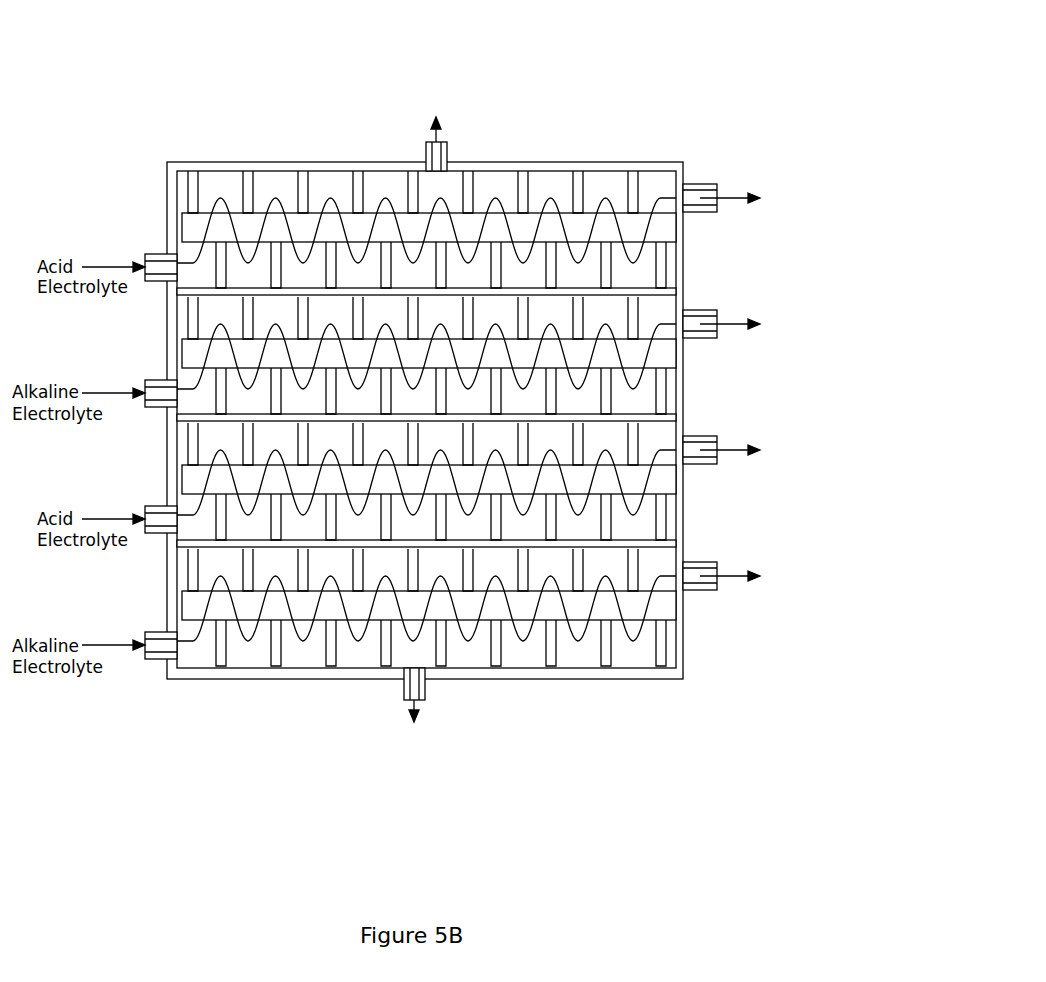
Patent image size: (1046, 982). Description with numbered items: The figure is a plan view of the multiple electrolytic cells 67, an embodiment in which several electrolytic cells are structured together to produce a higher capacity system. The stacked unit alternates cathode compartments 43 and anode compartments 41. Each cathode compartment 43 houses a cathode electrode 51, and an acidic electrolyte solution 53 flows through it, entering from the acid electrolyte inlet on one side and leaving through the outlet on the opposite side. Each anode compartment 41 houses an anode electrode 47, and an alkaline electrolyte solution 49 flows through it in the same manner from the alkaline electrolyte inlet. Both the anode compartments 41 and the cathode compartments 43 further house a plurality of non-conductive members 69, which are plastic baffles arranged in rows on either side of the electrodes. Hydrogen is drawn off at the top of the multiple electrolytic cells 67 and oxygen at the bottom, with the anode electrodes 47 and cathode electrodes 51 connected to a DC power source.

The multiple electrolytic cells 67 is at (631, 106).
The non-conductive members 69 is at (302, 182).
The cathode electrode 51 is at (197, 222).
The anode electrode 47 is at (192, 352).
The cathode compartment 43 is at (687, 237).
The anode compartment 41 is at (687, 377).
The acidic electrolyte solution 53 is at (645, 275).
The alkaline electrolyte solution 49 is at (640, 408).